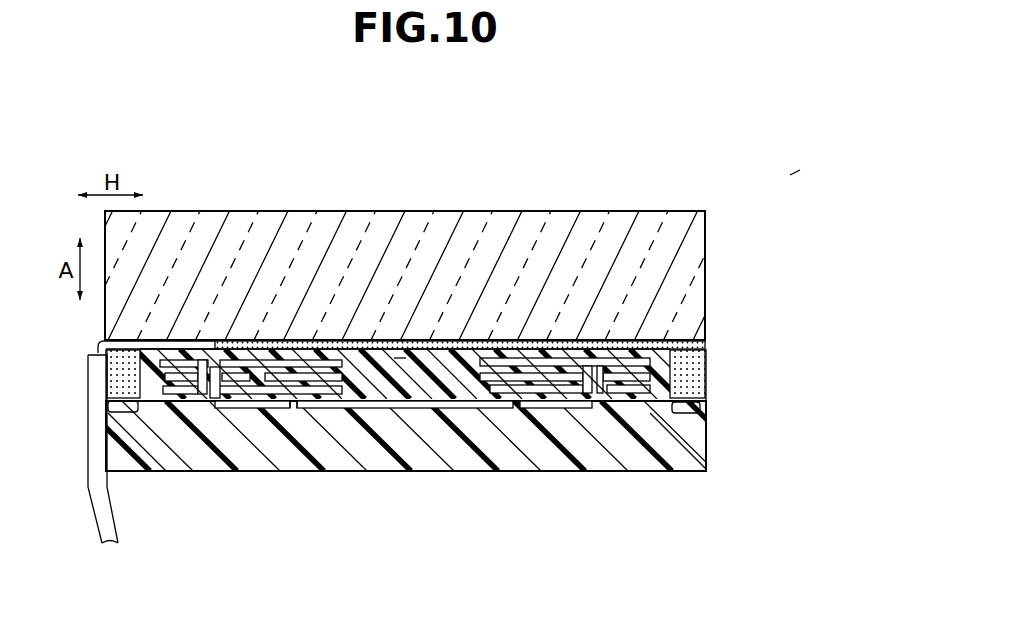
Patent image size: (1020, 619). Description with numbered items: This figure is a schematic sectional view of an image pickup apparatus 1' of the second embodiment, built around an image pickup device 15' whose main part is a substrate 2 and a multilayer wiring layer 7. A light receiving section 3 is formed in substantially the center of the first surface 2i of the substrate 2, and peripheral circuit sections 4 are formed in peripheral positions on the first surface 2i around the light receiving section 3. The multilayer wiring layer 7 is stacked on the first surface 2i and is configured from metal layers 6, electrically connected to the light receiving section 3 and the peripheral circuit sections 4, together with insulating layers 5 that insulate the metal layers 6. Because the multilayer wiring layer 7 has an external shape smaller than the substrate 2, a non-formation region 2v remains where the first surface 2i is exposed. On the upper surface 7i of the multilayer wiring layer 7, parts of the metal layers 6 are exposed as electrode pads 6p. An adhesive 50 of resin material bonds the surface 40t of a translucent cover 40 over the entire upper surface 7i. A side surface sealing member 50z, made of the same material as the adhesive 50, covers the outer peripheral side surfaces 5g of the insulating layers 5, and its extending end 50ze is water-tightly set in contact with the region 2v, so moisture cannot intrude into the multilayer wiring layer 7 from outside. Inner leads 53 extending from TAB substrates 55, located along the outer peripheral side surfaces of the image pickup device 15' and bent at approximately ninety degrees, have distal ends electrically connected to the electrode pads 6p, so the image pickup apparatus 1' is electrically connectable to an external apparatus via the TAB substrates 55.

The image pickup apparatus 1' is at (813, 122).
The substrate 2 is at (495, 457).
The first surface 2i is at (400, 358).
The non-formation region 2v is at (124, 412).
The light receiving section 3 is at (338, 410).
The peripheral circuit sections 4 is at (247, 410).
The insulating layers 5 is at (665, 352).
The outer peripheral side surfaces 5g is at (133, 373).
The metal layers 6 is at (625, 352).
The electrode pads 6p is at (215, 348).
The multilayer wiring layer 7 is at (653, 126).
The upper surface 7i is at (373, 352).
The image pickup device 15' is at (460, 237).
The translucent cover 40 is at (288, 252).
The surface of translucent cover 40t is at (437, 347).
The adhesive 50 is at (338, 292).
The side surface sealing member 50z is at (135, 352).
The extending end 50ze is at (113, 392).
The inner leads 53 is at (168, 358).
The TAB substrates 55 is at (97, 511).